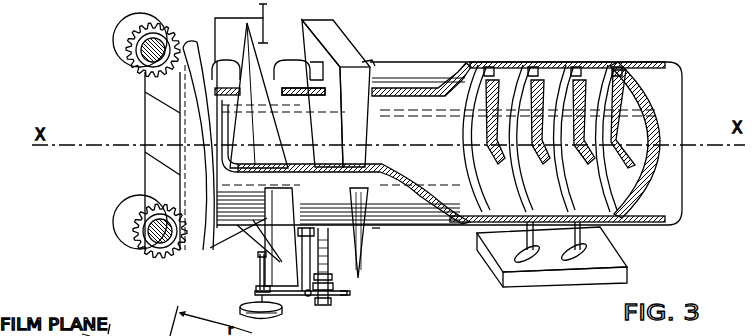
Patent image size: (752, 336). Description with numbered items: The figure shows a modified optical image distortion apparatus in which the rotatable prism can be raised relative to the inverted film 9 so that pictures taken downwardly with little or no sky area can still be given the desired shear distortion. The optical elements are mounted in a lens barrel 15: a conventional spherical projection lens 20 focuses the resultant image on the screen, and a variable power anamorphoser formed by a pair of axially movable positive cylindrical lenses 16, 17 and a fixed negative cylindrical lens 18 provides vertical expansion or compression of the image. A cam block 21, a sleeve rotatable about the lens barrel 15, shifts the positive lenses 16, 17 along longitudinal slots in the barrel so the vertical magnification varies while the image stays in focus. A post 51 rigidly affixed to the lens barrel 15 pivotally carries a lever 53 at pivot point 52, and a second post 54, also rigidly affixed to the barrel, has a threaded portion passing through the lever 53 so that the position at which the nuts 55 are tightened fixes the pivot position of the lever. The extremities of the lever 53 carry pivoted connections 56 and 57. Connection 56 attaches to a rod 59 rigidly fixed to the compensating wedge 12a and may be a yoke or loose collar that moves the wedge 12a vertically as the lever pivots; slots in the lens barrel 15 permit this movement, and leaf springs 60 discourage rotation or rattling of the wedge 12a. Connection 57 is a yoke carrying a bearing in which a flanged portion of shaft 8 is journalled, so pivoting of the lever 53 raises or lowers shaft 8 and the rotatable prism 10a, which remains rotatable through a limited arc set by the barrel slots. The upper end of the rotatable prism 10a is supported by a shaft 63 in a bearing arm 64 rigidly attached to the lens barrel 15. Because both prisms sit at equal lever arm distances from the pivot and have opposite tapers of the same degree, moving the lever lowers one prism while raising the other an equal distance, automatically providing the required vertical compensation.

The inverted film 9 is at (155, 128).
The bearing arm 64 is at (213, 42).
The shaft 63 is at (264, 22).
The leaf springs 60 is at (303, 58).
The compensating wedge 12a is at (358, 31).
The projection lens 20 is at (464, 68).
The positive cylindrical lens 16 is at (518, 68).
The positive cylindrical lens 17 is at (564, 68).
The negative cylindrical lens 18 is at (607, 68).
The cam block 21 is at (603, 256).
The rotatable prism 10a is at (253, 237).
The shaft 8 is at (260, 267).
The pivoted connection 57 is at (256, 290).
The lever 53 is at (278, 295).
The pivot point 52 is at (311, 298).
The post 51 is at (312, 253).
The rod 59 is at (330, 268).
The nuts 55 is at (334, 286).
The pivoted connection 56 is at (352, 294).
The post 54 is at (392, 250).
The lens barrel 15 is at (387, 216).